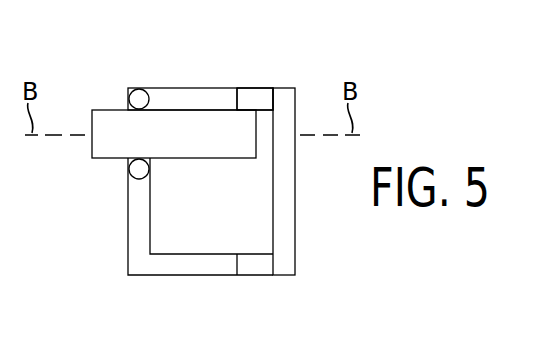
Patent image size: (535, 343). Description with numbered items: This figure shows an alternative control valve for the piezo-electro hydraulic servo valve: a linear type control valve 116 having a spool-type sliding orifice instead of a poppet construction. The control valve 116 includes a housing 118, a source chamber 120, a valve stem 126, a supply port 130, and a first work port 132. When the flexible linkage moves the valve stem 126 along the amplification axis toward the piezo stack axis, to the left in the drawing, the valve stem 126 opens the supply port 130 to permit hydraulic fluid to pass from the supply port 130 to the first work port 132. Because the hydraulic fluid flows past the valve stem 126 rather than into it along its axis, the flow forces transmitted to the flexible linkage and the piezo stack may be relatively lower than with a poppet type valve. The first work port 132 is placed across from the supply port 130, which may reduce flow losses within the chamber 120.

The linear type control valve 116 is at (168, 126).
The housing 118 is at (226, 87).
The source chamber 120 is at (255, 233).
The valve stem 126 is at (199, 137).
The supply port 130 is at (268, 92).
The first work port 132 is at (273, 266).